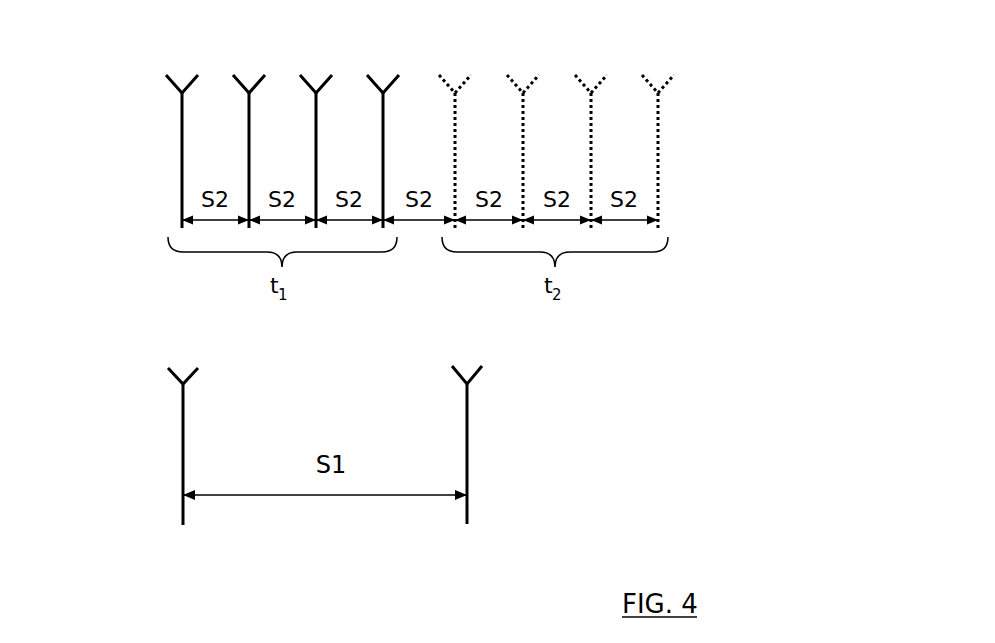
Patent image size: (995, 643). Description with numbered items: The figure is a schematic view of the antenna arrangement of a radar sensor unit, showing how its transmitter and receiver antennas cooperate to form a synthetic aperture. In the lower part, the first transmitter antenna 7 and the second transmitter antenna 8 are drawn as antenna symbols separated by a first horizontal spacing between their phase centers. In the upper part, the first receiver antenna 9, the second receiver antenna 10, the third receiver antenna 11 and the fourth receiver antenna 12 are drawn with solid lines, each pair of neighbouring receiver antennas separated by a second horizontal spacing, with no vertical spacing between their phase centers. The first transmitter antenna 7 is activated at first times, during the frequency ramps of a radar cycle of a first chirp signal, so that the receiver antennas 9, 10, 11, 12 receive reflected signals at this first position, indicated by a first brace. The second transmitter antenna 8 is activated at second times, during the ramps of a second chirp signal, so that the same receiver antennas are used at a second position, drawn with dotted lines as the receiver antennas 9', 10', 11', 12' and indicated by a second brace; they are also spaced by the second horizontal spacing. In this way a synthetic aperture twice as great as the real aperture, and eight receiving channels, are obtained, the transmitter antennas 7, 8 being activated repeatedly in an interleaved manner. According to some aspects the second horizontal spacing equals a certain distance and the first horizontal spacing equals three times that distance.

The first transmitter antenna 7 is at (183, 428).
The second transmitter antenna 8 is at (465, 430).
The first receiver antenna 9 is at (126, 151).
The second receiver antenna 10 is at (156, 151).
The third receiver antenna 11 is at (189, 151).
The fourth receiver antenna 12 is at (223, 148).
The first receiver antenna at second position 9' is at (716, 151).
The second receiver antenna at second position 10' is at (690, 151).
The third receiver antenna at second position 11' is at (656, 151).
The fourth receiver antenna at second position 12' is at (622, 151).